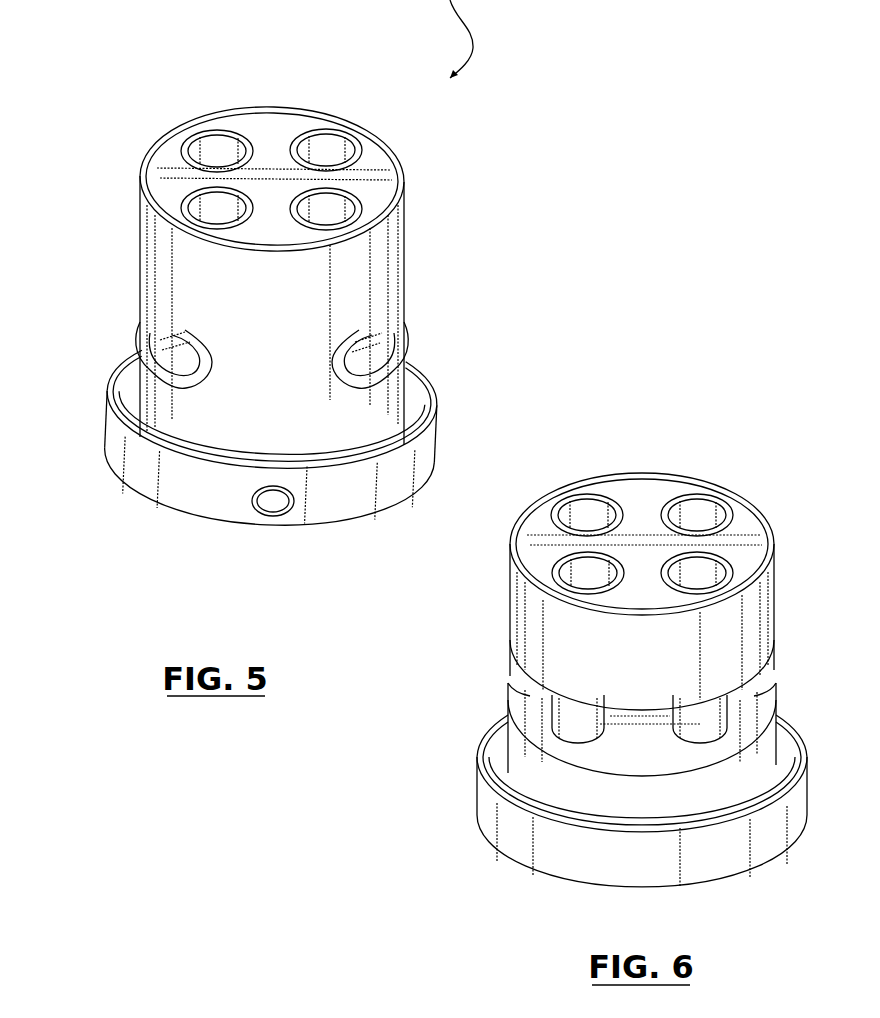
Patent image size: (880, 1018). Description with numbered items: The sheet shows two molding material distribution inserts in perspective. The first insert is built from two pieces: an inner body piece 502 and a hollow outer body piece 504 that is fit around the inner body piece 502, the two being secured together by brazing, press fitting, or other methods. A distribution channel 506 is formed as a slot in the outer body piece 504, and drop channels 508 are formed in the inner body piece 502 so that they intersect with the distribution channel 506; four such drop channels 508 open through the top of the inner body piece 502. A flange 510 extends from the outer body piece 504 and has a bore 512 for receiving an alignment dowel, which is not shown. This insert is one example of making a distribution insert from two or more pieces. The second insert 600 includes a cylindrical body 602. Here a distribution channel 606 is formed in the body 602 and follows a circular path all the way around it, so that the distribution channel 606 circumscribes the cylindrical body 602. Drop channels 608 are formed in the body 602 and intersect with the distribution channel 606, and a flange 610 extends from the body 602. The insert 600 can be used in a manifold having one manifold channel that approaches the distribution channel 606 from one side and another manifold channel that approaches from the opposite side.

In FIG. 5, the inner body piece 502 is at (252, 125).
In FIG. 5, the hollow outer body piece 504 is at (158, 143).
In FIG. 5, the distribution channel 506 is at (148, 334).
In FIG. 5, the drop channels 508 is at (202, 147).
In FIG. 5, the flange 510 is at (112, 457).
In FIG. 5, the bore 512 is at (277, 500).
In FIG. 6, the insert 600 is at (813, 459).
In FIG. 6, the cylindrical body 602 is at (525, 633).
In FIG. 6, the distribution channel 606 is at (532, 700).
In FIG. 6, the drop channels 608 is at (578, 513).
In FIG. 6, the flange 610 is at (488, 807).